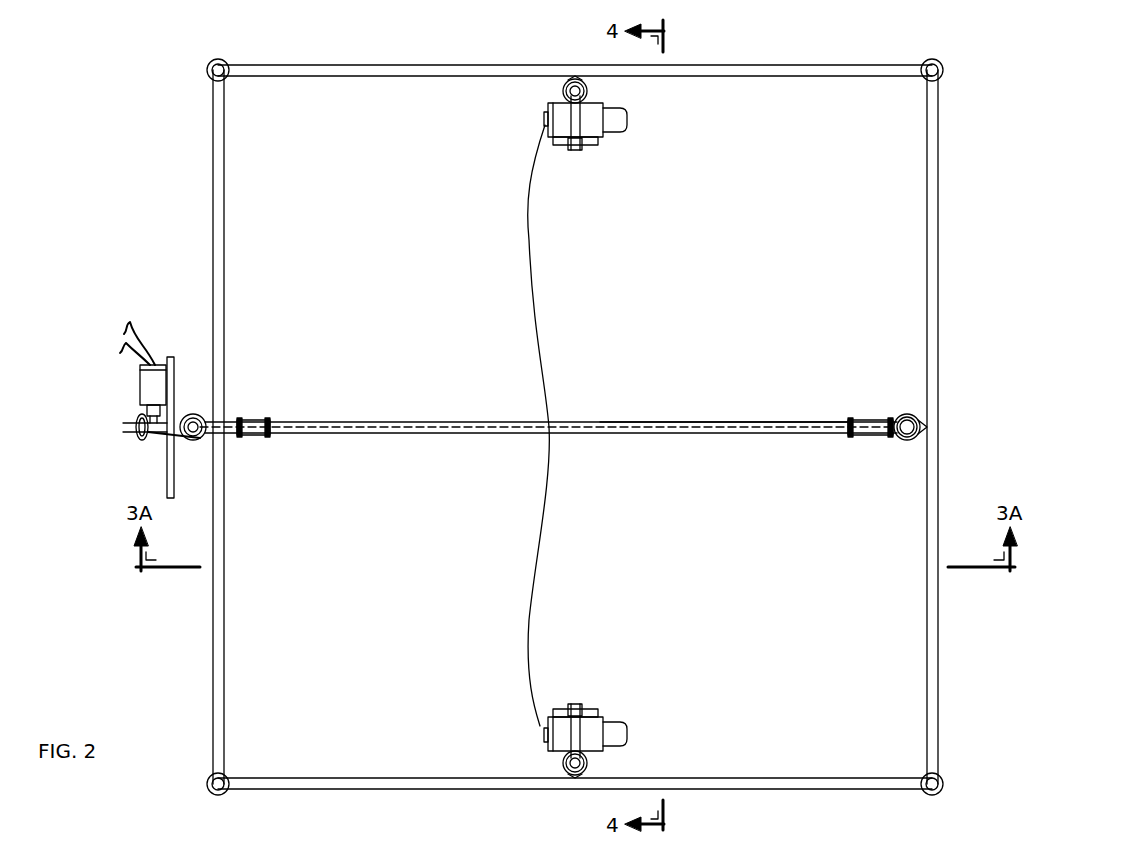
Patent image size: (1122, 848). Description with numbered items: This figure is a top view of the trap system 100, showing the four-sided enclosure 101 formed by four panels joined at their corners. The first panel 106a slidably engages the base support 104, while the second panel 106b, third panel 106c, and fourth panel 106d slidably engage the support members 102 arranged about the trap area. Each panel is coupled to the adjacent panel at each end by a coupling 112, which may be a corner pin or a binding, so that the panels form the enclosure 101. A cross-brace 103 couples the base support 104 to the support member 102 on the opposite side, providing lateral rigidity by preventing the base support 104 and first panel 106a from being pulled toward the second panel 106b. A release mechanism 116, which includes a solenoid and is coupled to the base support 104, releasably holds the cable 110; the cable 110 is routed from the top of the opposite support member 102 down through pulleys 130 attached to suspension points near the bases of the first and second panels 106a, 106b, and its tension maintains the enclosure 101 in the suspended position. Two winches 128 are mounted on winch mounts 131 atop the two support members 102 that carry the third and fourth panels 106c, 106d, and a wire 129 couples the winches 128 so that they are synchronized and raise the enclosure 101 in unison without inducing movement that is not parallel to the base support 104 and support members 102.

The trap system 100 is at (1013, 160).
The enclosure 101 is at (952, 279).
The support members 102 is at (905, 412).
The cross-brace 103 is at (392, 420).
The base support 104 is at (200, 440).
The first panel 106a is at (226, 250).
The second panel 106b is at (927, 600).
The third panel 106c is at (785, 777).
The fourth panel 106d is at (368, 78).
The cable 110 is at (708, 420).
The couplings 112 is at (209, 64).
The release mechanism 116 is at (108, 395).
The winch 128 is at (590, 122).
The wire 129 is at (528, 215).
The pulleys 130 is at (262, 420).
The winch mounts 131 is at (575, 151).